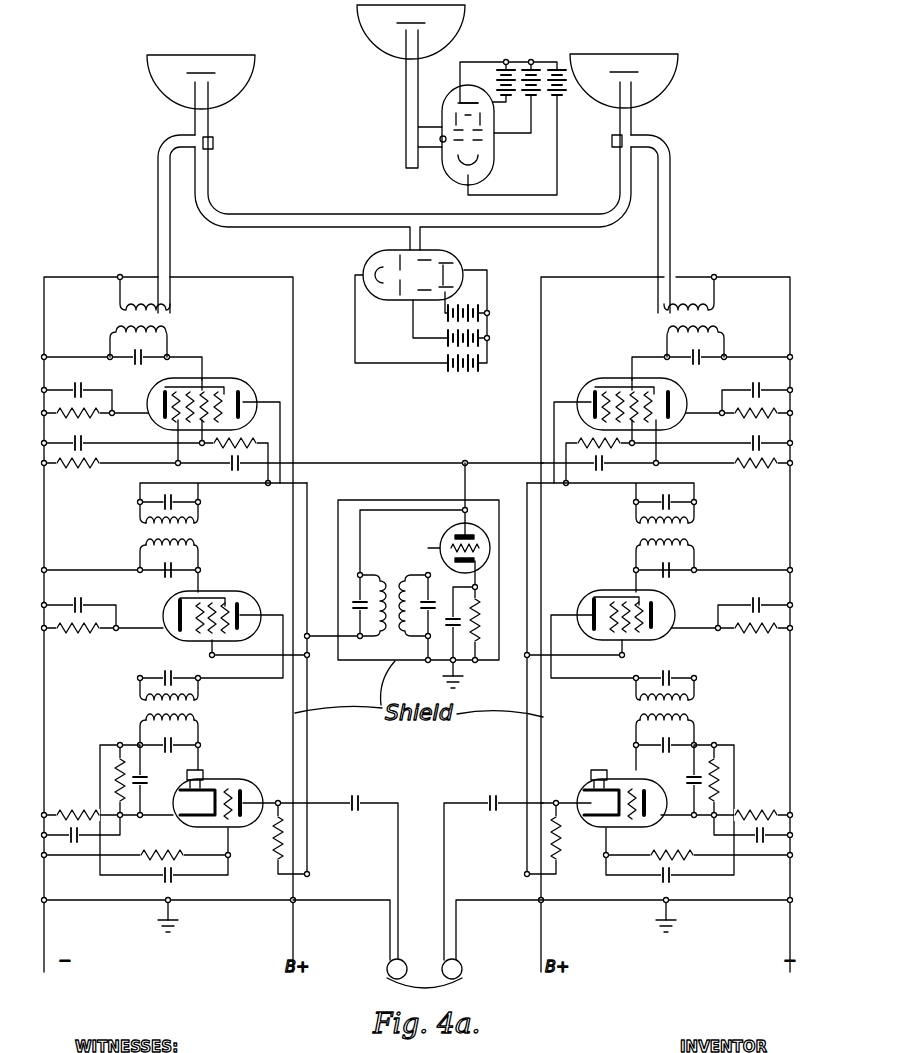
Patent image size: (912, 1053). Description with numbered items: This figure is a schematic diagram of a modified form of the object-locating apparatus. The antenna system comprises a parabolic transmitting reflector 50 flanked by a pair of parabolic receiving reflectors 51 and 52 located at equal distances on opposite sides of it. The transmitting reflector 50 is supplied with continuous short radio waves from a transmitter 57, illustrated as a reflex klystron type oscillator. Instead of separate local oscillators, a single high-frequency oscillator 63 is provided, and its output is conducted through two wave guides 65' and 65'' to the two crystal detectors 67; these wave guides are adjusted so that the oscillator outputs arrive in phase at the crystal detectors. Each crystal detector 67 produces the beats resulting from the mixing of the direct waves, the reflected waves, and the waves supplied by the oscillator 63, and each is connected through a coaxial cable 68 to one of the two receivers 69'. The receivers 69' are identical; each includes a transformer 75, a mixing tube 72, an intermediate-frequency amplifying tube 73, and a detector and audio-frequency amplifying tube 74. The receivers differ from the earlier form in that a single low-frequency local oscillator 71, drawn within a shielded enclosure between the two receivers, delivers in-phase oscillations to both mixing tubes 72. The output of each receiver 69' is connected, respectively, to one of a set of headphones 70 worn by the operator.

The parabolic transmitting reflector 50 is at (371, 39).
The parabolic receiving reflector 51 is at (162, 84).
The parabolic receiving reflector 52 is at (667, 80).
The transmitter 57 is at (457, 94).
The high-frequency oscillator 63 is at (450, 258).
The wave guide 65' is at (413, 166).
The wave guide 65'' is at (528, 240).
The crystal detector 67 is at (212, 149).
The coaxial cable 68 is at (157, 225).
The receiver 69' is at (417, 614).
The headphones 70 is at (416, 982).
The local oscillator 71 is at (434, 544).
The mixing tube 72 is at (229, 380).
The intermediate-frequency amplifying tube 73 is at (235, 590).
The detector and audio-frequency amplifying tube 74 is at (262, 781).
The transformer 75 is at (156, 318).